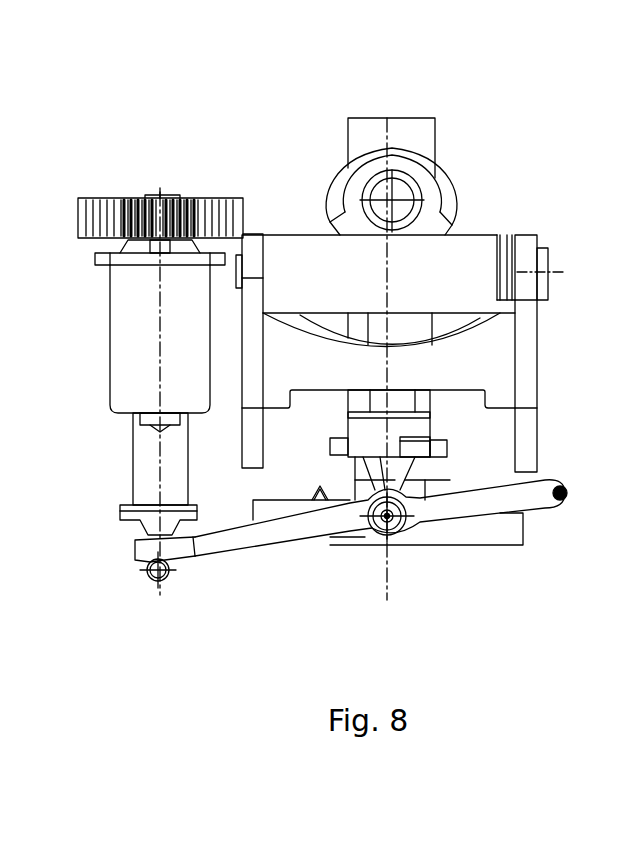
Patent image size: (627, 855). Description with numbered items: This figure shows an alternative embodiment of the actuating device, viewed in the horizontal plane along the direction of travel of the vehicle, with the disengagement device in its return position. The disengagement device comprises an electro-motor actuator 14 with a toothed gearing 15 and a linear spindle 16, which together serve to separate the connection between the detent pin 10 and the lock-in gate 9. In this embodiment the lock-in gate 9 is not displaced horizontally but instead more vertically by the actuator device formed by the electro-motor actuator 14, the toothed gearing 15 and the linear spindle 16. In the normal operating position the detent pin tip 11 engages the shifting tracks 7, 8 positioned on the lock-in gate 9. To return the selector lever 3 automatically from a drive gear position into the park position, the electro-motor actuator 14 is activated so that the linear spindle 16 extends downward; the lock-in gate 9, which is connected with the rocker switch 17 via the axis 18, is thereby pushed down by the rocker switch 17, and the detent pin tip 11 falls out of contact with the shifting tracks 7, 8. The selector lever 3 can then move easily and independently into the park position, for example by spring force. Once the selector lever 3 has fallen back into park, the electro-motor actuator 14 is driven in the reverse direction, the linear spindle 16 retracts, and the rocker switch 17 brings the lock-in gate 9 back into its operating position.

The selector lever 3 is at (411, 129).
The shifting track 7 is at (320, 500).
The shifting track 8 is at (320, 500).
The lock-in gate 9 is at (483, 530).
The detent pin 10 is at (405, 325).
The detent pin tip 11 is at (395, 471).
The electro-motor actuator 14 is at (141, 362).
The toothed gearing 15 is at (188, 145).
The linear spindle 16 is at (149, 470).
The rocker switch 17 is at (243, 535).
The axis 18 is at (387, 516).